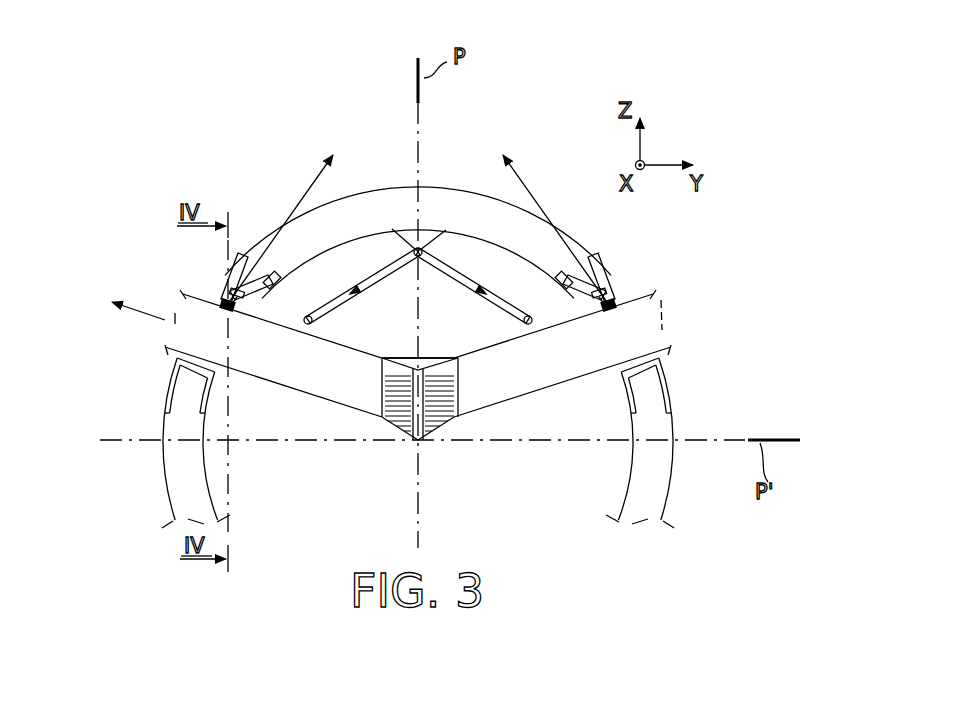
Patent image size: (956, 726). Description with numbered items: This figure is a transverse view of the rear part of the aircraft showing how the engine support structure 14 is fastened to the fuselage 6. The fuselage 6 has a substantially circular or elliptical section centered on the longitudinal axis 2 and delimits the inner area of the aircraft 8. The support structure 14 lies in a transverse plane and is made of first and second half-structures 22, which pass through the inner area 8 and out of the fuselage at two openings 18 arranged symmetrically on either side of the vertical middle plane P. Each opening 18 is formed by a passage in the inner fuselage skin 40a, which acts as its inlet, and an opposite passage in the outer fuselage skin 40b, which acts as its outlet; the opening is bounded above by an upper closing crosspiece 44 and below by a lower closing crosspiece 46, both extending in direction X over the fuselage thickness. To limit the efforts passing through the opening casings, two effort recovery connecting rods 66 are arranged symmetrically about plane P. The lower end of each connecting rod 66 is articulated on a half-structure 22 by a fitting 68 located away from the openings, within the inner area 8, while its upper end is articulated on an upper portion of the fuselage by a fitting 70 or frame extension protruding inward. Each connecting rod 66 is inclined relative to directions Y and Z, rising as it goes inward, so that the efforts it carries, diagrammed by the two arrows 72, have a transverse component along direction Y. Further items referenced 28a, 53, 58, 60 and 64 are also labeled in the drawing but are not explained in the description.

The longitudinal axis 2 is at (425, 445).
The fuselage 6 is at (438, 183).
The inner area of the aircraft 8 is at (440, 297).
The support structure 14 is at (397, 455).
The fuselage opening 18 is at (168, 352).
The support half-structure 22 is at (347, 414).
The flight direction 28a is at (147, 310).
The inner fuselage skin 40a is at (300, 264).
The outer fuselage skin 40b is at (358, 188).
The upper closing crosspiece 44 is at (245, 315).
The lower closing crosspiece 46 is at (208, 388).
The hinge plate 53 is at (246, 262).
The wing pivot direction 58 is at (309, 194).
The wing pivot direction 60 is at (556, 230).
The hinge pin 64 is at (222, 300).
The effort recovery connecting rod 66 is at (380, 285).
The fitting 68 is at (322, 336).
The fitting 70 is at (415, 243).
The arrows 72 is at (331, 308).